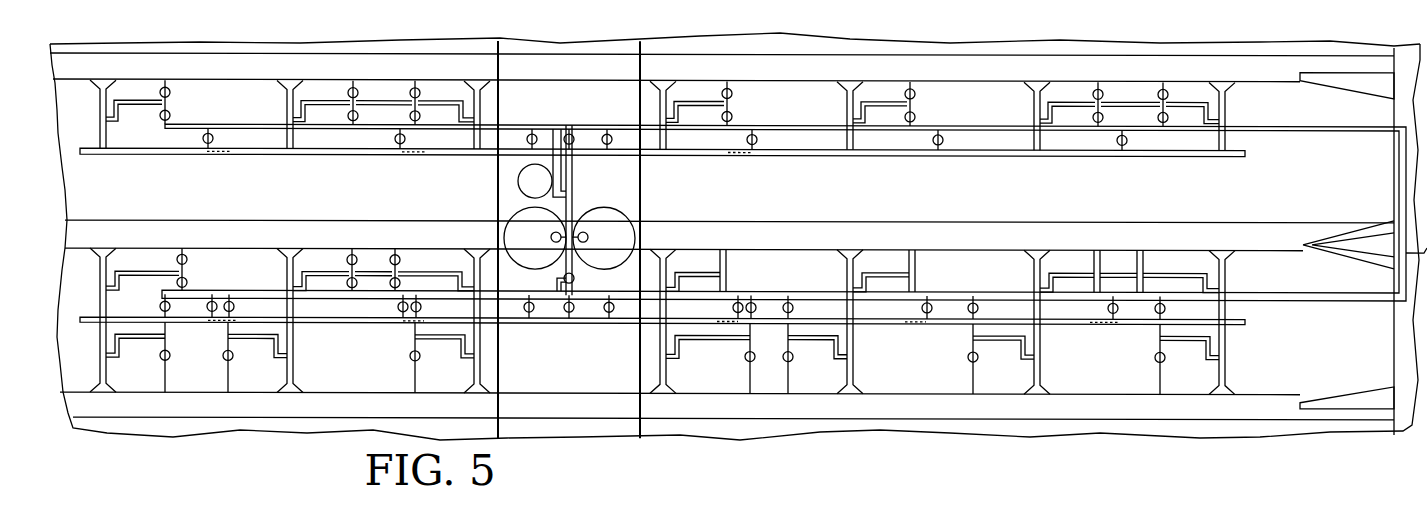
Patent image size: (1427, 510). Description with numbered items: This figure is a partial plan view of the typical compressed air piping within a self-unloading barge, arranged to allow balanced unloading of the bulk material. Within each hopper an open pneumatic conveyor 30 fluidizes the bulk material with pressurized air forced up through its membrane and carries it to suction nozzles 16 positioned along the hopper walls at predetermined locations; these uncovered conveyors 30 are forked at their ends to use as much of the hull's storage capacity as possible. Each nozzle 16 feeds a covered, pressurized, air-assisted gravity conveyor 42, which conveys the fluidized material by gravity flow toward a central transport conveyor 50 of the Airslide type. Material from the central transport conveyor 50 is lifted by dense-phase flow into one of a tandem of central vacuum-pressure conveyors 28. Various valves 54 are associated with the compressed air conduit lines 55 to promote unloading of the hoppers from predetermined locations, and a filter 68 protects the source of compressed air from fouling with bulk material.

The suction nozzle 16 is at (103, 84).
The central vacuum-pressure conveyor 28 is at (514, 248).
The open pneumatic conveyor 30 is at (419, 54).
The covered air-assisted gravity conveyor 42 is at (100, 117).
The central transport conveyor 50 is at (330, 155).
The valve 54 is at (415, 111).
The compressed air conduit line 55 is at (1293, 129).
The filter 68 is at (518, 180).